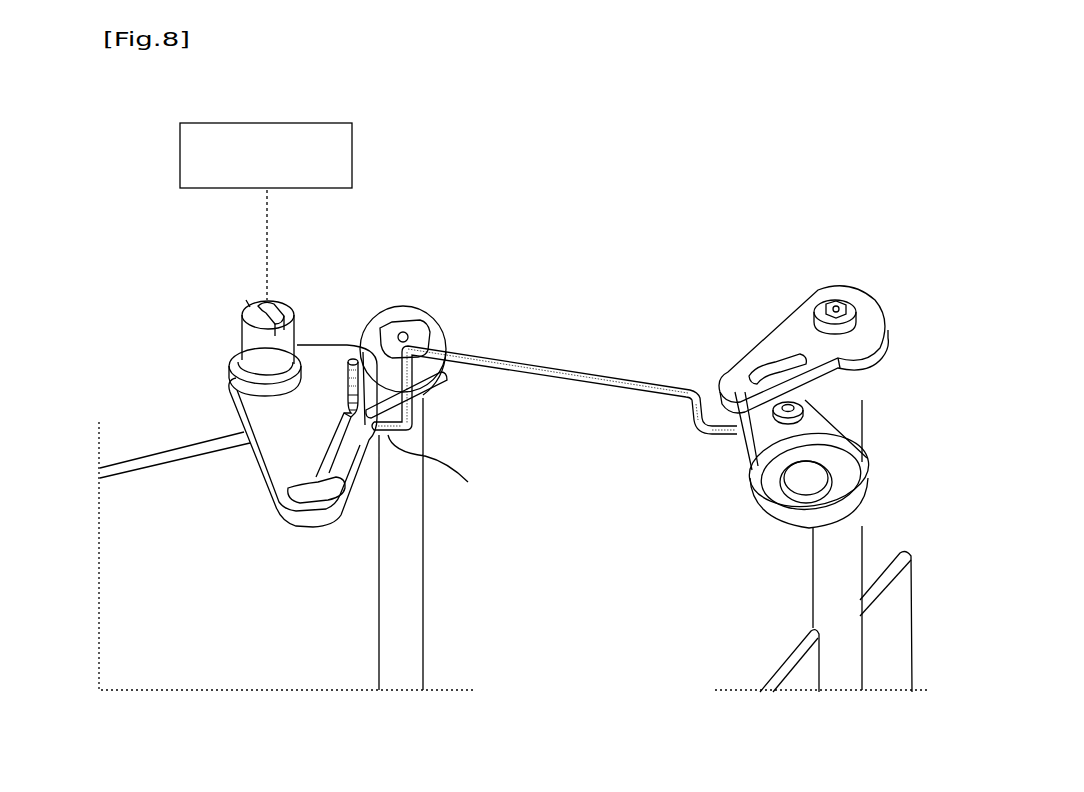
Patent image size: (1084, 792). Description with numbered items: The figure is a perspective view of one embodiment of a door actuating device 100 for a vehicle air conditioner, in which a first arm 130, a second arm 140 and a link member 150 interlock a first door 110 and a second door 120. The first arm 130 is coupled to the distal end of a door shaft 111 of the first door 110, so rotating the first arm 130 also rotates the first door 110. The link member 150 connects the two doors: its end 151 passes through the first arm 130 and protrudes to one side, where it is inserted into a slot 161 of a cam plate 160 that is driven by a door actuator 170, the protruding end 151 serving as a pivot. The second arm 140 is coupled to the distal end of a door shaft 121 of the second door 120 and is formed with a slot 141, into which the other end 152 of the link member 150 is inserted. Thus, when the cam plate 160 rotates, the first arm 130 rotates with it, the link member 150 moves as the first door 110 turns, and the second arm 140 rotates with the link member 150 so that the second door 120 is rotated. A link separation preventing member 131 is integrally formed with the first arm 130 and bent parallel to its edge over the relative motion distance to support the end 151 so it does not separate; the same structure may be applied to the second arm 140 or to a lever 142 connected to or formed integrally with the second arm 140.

The door actuating device 100 is at (529, 320).
The first door 110 is at (178, 445).
The door shaft 111 is at (413, 614).
The second door 120 is at (800, 650).
The door shaft 121 is at (823, 586).
The first arm 130 is at (432, 302).
The link separation preventing member 131 is at (396, 440).
The second arm 140 is at (797, 320).
The slot 141 is at (795, 355).
The lever 142 is at (750, 473).
The link member 150 is at (608, 385).
The end 151 is at (350, 346).
The other end 152 is at (848, 431).
The cam plate 160 is at (259, 482).
The slot 161 is at (338, 514).
The door actuator 170 is at (336, 152).